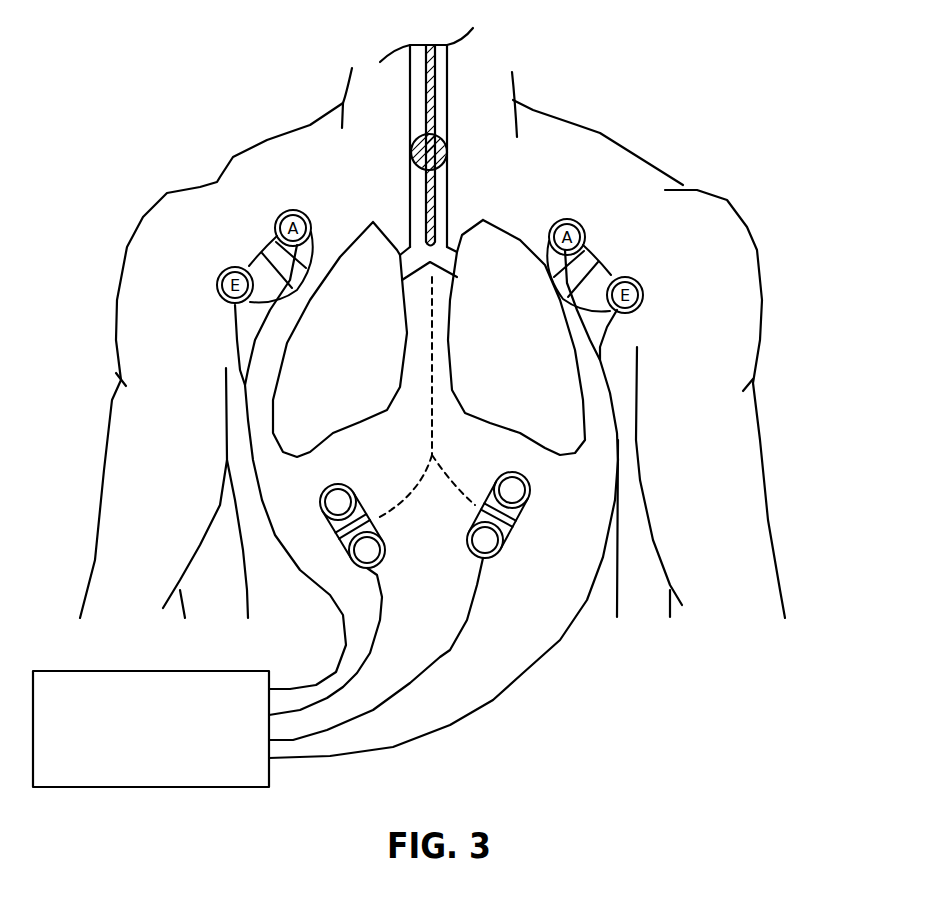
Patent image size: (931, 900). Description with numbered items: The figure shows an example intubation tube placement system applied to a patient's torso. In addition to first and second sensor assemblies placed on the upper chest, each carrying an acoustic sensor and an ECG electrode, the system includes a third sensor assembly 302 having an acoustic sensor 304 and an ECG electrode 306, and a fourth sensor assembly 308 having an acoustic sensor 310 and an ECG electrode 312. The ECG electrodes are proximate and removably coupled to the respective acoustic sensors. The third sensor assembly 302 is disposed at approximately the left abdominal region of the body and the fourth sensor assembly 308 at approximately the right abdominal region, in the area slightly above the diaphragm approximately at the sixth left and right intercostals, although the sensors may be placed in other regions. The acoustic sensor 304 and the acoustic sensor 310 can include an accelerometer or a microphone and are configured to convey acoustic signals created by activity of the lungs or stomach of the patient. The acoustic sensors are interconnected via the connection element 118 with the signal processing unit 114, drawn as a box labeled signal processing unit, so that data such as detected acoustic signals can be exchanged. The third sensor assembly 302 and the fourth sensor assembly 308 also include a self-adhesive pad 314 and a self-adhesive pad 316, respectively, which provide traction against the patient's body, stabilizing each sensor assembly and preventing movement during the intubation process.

The signal processing unit 114 is at (151, 762).
The connection element 118 is at (426, 501).
The third sensor assembly 302 is at (658, 548).
The acoustic sensor 304 is at (665, 488).
The ECG electrode 306 is at (658, 540).
The fourth sensor assembly 308 is at (194, 492).
The acoustic sensor 310 is at (193, 507).
The electrical electrode 312 is at (194, 541).
The self-adhesive pad 314 is at (566, 579).
The self-adhesive pad 316 is at (193, 641).